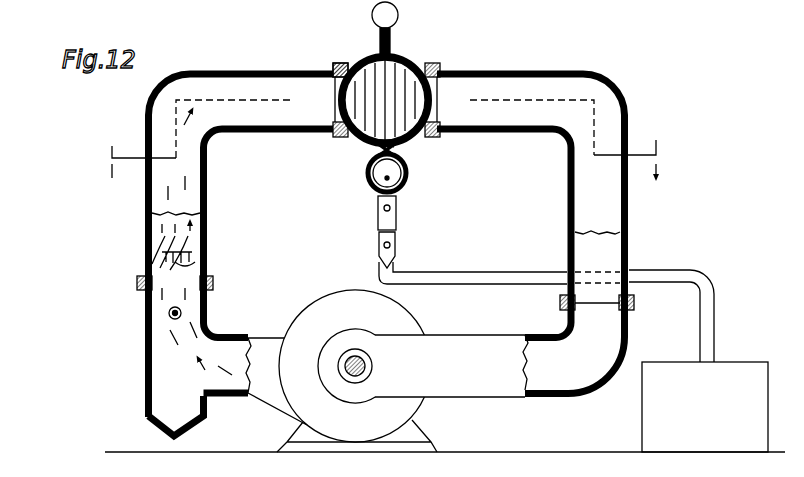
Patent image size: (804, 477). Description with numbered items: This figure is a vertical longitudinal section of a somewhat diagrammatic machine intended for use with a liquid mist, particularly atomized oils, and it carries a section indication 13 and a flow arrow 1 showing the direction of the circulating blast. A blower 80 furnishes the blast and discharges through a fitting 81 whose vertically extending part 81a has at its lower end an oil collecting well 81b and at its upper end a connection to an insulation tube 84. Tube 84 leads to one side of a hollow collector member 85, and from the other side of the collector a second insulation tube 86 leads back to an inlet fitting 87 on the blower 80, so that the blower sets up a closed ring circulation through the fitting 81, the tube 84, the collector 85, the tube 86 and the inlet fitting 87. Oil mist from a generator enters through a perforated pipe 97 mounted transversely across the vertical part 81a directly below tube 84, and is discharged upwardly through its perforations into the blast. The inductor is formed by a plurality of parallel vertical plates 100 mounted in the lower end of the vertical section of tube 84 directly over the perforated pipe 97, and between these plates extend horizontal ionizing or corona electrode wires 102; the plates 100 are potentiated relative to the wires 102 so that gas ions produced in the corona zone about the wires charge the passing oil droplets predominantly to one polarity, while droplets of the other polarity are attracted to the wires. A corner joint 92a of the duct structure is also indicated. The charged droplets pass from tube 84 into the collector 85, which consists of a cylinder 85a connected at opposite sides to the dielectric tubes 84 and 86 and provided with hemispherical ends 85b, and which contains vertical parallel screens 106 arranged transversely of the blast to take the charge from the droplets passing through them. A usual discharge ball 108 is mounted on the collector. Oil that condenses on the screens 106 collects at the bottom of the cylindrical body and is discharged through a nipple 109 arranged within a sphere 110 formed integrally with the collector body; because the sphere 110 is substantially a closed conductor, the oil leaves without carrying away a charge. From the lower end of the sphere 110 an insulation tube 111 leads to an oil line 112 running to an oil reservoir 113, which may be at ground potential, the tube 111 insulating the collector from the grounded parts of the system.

The flow arrow 1 is at (188, 117).
The section line 13- 13 is at (382, 139).
The blower 80 is at (323, 290).
The fitting 81 is at (250, 335).
The vertically extending part 81a is at (148, 355).
The oil collecting well 81b is at (165, 425).
The insulation tube 84 is at (207, 185).
The hollow collector member 85 is at (410, 58).
The cylinder 85a is at (358, 62).
The hemispherical ends 85b is at (330, 470).
The second insulation tube 86 is at (545, 70).
The inlet fitting 87 is at (530, 398).
The inner tube corner flange 92a is at (213, 290).
The perforated pipe 97 is at (168, 313).
The parallel vertical plates 100 is at (200, 232).
The ionizing or corona electrode wires 102 is at (150, 276).
The vertical parallel screens 106 is at (395, 92).
The discharge ball 108 is at (372, 13).
The nipple 109 is at (400, 151).
The sphere 110 is at (408, 182).
The insulation tube 111 is at (398, 222).
The oil line 112 is at (478, 272).
The oil reservoir 113 is at (705, 407).